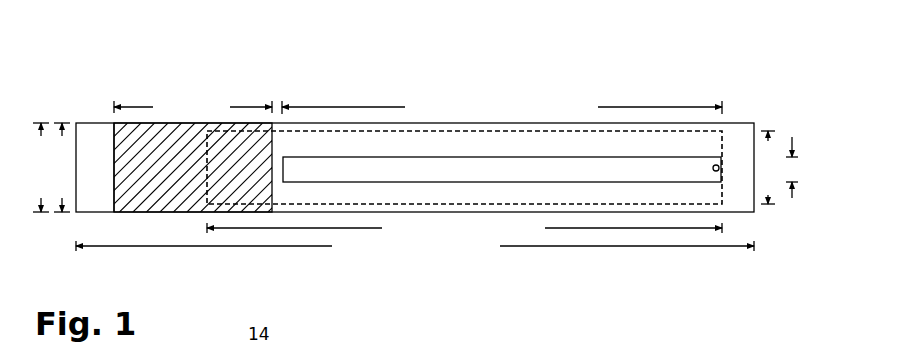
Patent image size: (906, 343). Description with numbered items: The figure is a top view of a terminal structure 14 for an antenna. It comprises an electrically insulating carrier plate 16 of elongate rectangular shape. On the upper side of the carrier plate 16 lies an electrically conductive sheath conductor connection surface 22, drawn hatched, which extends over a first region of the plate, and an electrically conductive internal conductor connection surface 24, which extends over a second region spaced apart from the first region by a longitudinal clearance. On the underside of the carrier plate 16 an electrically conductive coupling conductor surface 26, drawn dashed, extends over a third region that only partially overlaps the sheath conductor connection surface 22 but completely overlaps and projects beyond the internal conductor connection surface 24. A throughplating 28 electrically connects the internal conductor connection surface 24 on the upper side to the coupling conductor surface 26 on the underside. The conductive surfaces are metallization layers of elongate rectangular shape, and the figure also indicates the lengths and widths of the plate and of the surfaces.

The terminal structure 14 is at (238, 49).
The carrier plate 16 is at (96, 140).
The sheath conductor connection surface 22 is at (175, 137).
The internal conductor connection surface 24 is at (423, 168).
The coupling conductor surface 26 is at (500, 204).
The throughplating 28 is at (718, 165).